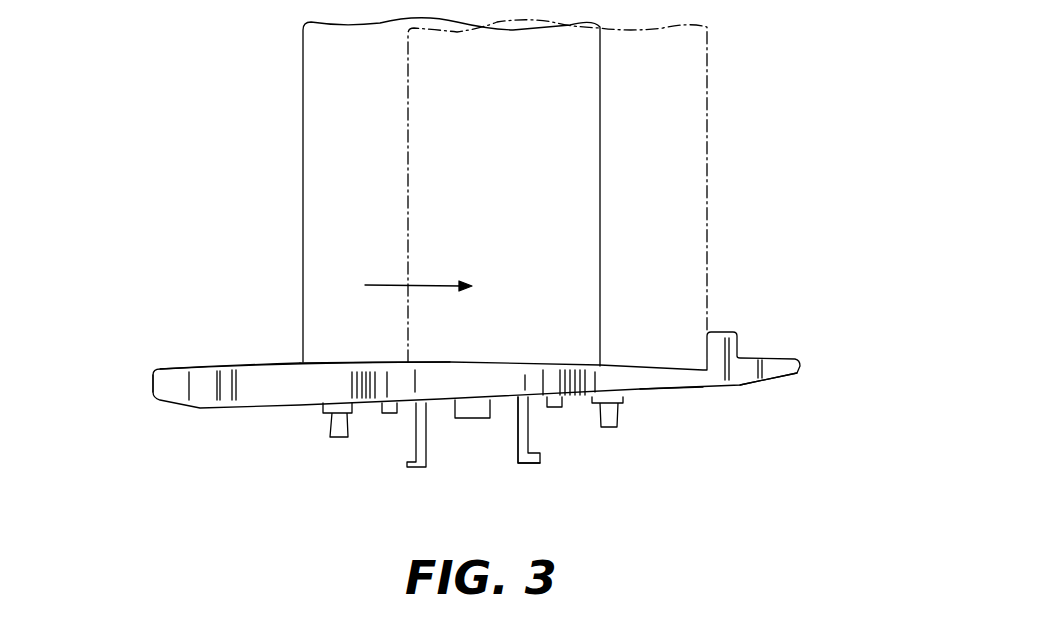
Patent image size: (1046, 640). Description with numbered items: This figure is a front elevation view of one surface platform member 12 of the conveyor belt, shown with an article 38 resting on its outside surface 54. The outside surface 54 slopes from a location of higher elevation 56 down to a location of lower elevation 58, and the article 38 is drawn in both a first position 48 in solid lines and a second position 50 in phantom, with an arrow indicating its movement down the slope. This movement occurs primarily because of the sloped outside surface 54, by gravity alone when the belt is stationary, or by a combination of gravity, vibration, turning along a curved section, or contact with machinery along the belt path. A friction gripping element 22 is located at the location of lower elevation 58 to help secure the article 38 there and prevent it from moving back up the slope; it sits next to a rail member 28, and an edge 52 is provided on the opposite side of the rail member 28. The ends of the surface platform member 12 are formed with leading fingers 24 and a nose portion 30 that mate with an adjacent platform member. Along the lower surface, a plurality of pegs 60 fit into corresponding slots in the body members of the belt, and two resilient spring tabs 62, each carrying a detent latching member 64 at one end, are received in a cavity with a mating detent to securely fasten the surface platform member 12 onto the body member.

The surface platform member 12 is at (160, 390).
The friction gripping element 22 is at (688, 377).
The leading fingers 24 is at (202, 408).
The rail member 28 is at (715, 342).
The nose portion 30 is at (495, 385).
The article 38 is at (437, 107).
The first position 48 is at (320, 152).
The second position 50 is at (680, 115).
The edge 52 is at (773, 360).
The outside surface 54 is at (232, 365).
The location of higher elevation 56 is at (287, 373).
The location of lower elevation 58 is at (665, 380).
The pegs 60 is at (332, 430).
The spring tabs 62 is at (523, 400).
The detent latching member 64 is at (410, 467).